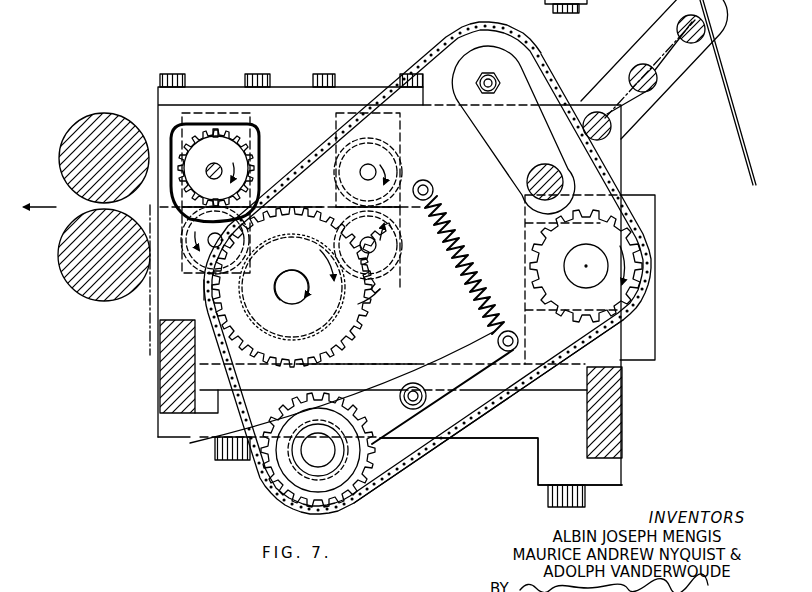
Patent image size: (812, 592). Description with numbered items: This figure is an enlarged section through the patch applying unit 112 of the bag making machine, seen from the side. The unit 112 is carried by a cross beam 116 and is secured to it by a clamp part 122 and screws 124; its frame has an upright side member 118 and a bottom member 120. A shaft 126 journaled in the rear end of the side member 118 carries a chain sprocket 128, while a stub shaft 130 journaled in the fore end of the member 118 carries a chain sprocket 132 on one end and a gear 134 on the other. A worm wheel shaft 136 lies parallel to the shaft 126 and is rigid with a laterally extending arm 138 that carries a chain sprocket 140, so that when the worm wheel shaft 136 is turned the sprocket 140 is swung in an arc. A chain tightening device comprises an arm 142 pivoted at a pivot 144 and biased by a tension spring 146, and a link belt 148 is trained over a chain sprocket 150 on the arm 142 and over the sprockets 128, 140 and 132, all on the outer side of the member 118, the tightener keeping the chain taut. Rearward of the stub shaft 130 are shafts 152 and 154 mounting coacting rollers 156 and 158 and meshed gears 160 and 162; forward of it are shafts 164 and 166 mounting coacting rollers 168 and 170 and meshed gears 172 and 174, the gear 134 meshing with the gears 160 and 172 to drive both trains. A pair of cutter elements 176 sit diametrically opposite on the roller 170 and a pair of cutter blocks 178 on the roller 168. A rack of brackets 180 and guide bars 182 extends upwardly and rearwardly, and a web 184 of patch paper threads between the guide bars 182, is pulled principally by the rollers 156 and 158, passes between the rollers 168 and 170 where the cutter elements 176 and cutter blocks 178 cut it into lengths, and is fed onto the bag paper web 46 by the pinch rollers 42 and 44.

The pinch roller 42 is at (75, 238).
The pinch roller 44 is at (70, 162).
The web of bag material 46 is at (150, 325).
The patch applying unit 112 is at (622, 163).
The cross beam 116 is at (165, 377).
The side member 118 is at (285, 113).
The bottom member 120 is at (385, 372).
The clamp part 122 is at (500, 428).
The screw 124 is at (564, 9).
The shaft 126 is at (602, 263).
The chain sprocket 128 is at (618, 237).
The stub shaft 130 is at (292, 287).
The chain sprocket 132 is at (362, 300).
The gear 134 is at (343, 307).
The worm wheel shaft 136 is at (522, 200).
The arm 138 is at (503, 163).
The chain sprocket 140 is at (497, 45).
The arm 142 is at (390, 423).
The pivot 144 is at (415, 410).
The tension spring 146 is at (482, 272).
The link belt 148 is at (328, 402).
The chain sprocket 150 is at (290, 468).
The shaft 152 is at (373, 246).
The shaft 154 is at (375, 173).
The roller 156 is at (405, 275).
The roller 158 is at (400, 148).
The gear 160 is at (413, 280).
The gear 162 is at (398, 126).
The shaft 164 is at (187, 300).
The shaft 166 is at (190, 163).
The roller 168 is at (215, 247).
The roller 170 is at (208, 167).
The gear 172 is at (262, 233).
The gear 174 is at (203, 132).
The cutter element 176 is at (218, 130).
The cutter block 178 is at (292, 287).
The bracket 180 is at (685, 60).
The guide bar 182 is at (597, 112).
The web of patch paper 184 is at (740, 135).